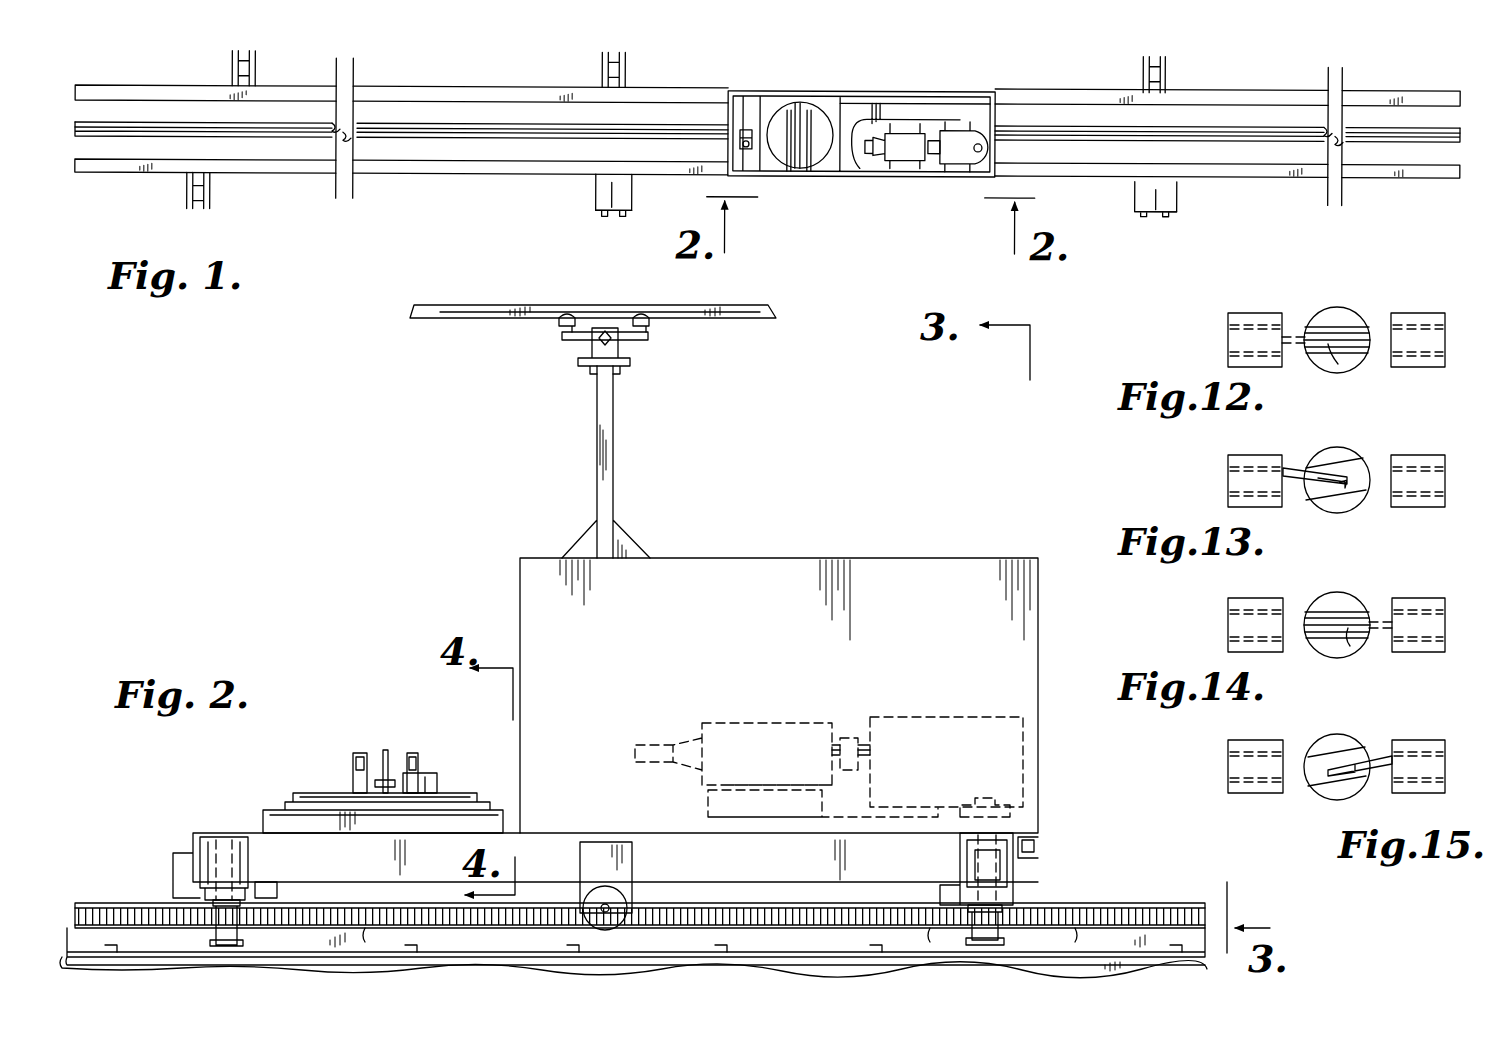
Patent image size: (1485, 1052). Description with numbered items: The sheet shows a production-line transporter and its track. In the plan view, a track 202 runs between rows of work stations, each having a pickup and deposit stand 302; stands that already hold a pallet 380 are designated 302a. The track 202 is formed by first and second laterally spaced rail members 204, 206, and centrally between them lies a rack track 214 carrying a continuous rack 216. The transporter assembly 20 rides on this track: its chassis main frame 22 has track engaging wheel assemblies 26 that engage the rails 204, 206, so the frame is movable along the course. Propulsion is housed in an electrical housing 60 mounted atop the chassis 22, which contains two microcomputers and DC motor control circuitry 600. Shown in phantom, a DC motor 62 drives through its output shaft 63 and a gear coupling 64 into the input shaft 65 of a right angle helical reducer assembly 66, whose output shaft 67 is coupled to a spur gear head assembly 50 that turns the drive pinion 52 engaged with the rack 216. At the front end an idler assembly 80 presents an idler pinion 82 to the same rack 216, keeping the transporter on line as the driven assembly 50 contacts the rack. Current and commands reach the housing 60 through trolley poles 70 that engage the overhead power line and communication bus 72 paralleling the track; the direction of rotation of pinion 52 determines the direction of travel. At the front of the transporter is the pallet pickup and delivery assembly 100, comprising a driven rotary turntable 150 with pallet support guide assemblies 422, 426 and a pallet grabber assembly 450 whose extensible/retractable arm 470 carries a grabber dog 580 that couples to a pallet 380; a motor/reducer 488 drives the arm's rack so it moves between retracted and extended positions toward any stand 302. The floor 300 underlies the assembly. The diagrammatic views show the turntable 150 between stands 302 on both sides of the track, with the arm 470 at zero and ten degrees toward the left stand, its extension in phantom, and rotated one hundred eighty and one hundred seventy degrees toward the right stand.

In FIG. 1, the transporter assembly 20 is at (936, 82).
In FIG. 2, the chassis main frame 22 is at (605, 865).
In FIG. 2, the track engaging wheel assemblies 26 is at (250, 875).
In FIG. 2, the spur gear head assembly 50 is at (1020, 828).
In FIG. 2, the drive pinion 52 is at (1000, 920).
In FIG. 2, the electrical housing 60 is at (884, 544).
In FIG. 1, the DC motor 62 is at (907, 160).
In FIG. 2, the DC motor 62 is at (786, 770).
In FIG. 2, the output shaft 63 is at (834, 746).
In FIG. 2, the gear coupling 64 is at (846, 738).
In FIG. 2, the input shaft 65 is at (867, 748).
In FIG. 1, the right angle helical reducer assembly 66 is at (961, 160).
In FIG. 2, the right angle helical reducer assembly 66 is at (946, 762).
In FIG. 2, the output shaft 67 is at (992, 782).
In FIG. 2, the trolley poles 70 is at (614, 400).
In FIG. 2, the electrical power line and communication bus 72 is at (698, 316).
In FIG. 1, the idler assembly 80 is at (747, 155).
In FIG. 2, the idler pinion 82 is at (242, 918).
In FIG. 1, the pallet pickup and delivery assembly 100 is at (800, 84).
In FIG. 2, the pallet pickup and delivery assembly 100 is at (347, 702).
In FIG. 2, the rotary turntable 150 is at (270, 792).
In FIG. 12, the rotary turntable 150 is at (1364, 315).
In FIG. 13, the rotary turntable 150 is at (1332, 448).
In FIG. 14, the rotary turntable 150 is at (1364, 600).
In FIG. 15, the rotary turntable 150 is at (1326, 796).
In FIG. 1, the track 202 is at (1421, 187).
In FIG. 1, the first rail member 204 is at (434, 97).
In FIG. 1, the second rail member 206 is at (390, 180).
In FIG. 2, the second rail member 206 is at (635, 946).
In FIG. 1, the rack track 214 is at (272, 108).
In FIG. 2, the rack track 214 is at (752, 890).
In FIG. 1, the rack 216 is at (266, 136).
In FIG. 2, the rack 216 is at (680, 912).
In FIG. 2, the floor 300 is at (633, 968).
In FIG. 1, the pickup and deposit stand 302 is at (266, 72).
In FIG. 12, the pickup and deposit stand 302 is at (1264, 313).
In FIG. 13, the pickup and deposit stand 302 is at (1268, 455).
In FIG. 14, the pickup and deposit stand 302 is at (1268, 596).
In FIG. 15, the pickup and deposit stand 302 is at (1282, 737).
In FIG. 1, the stand with pallet 302a is at (588, 190).
In FIG. 1, the pallet 380 is at (634, 186).
In FIG. 2, the pallet support guide assembly 422 is at (432, 756).
In FIG. 2, the pallet support guide assembly 426 is at (344, 746).
In FIG. 2, the pallet grabber assembly 450 is at (370, 732).
In FIG. 12, the extensible/retractable arm 470 is at (1337, 364).
In FIG. 13, the extensible/retractable arm 470 is at (1296, 453).
In FIG. 14, the extensible/retractable arm 470 is at (1350, 647).
In FIG. 15, the extensible/retractable arm 470 is at (1388, 742).
In FIG. 2, the reducer 488 is at (439, 777).
In FIG. 2, the grabber dog 580 is at (388, 750).
In FIG. 2, the DC motor control circuitry 600 is at (744, 599).